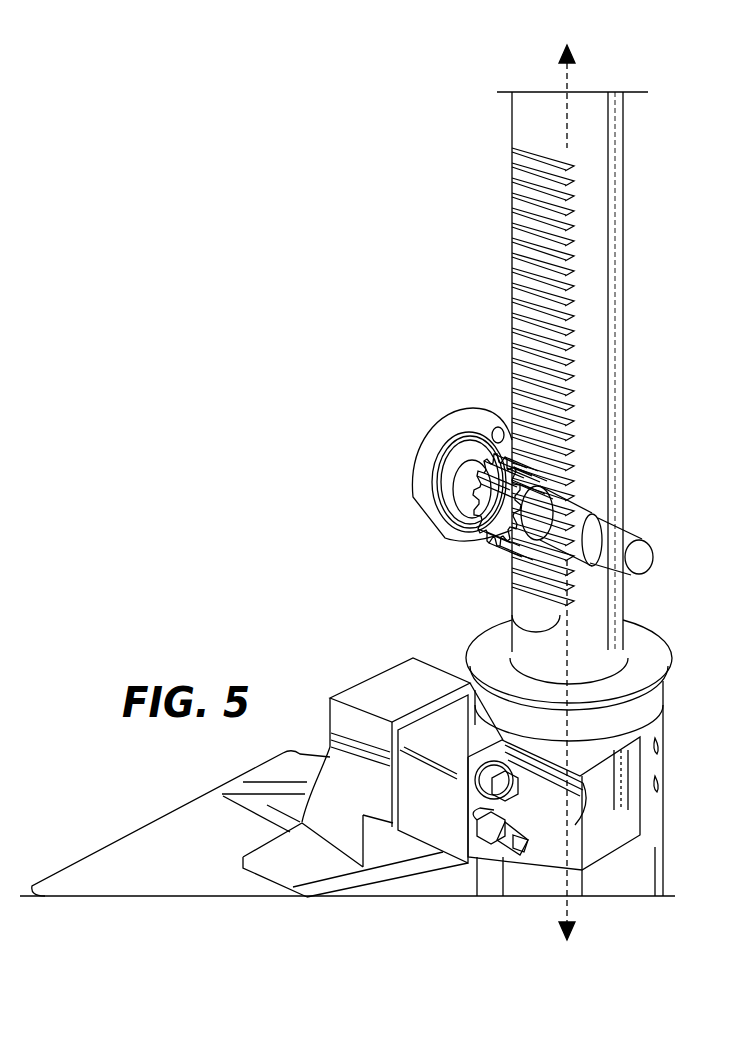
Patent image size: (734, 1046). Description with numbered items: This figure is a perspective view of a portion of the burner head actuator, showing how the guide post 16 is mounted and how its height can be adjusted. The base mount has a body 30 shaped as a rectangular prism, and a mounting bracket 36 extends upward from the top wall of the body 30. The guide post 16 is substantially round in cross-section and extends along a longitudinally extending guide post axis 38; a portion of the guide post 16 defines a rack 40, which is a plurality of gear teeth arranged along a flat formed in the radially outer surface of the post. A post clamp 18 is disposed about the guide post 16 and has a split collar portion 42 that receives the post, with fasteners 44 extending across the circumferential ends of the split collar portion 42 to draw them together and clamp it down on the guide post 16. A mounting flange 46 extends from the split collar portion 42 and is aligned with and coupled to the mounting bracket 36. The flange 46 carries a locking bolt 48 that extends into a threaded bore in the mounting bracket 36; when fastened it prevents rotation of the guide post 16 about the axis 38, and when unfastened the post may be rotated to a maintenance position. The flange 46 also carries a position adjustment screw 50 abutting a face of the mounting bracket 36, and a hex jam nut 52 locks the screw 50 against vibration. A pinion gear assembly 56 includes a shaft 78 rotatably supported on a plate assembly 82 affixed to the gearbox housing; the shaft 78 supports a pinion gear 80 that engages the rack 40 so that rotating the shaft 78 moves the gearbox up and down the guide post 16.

The guide post 16 is at (600, 122).
The post clamp 18 is at (663, 800).
The body 30 is at (167, 850).
The mounting bracket 36 is at (382, 690).
The guide post axis 38 is at (568, 75).
The rack 40 is at (512, 264).
The split collar portion 42 is at (602, 815).
The fasteners 44 is at (660, 783).
The mounting flange 46 is at (440, 808).
The locking bolt 48 is at (503, 787).
The position adjustment screw 50 is at (528, 852).
The hex jam nut 52 is at (475, 830).
The pinion gear assembly 56 is at (505, 480).
The shaft 78 is at (573, 513).
The pinion gear 80 is at (493, 505).
The plate assembly 82 is at (420, 479).